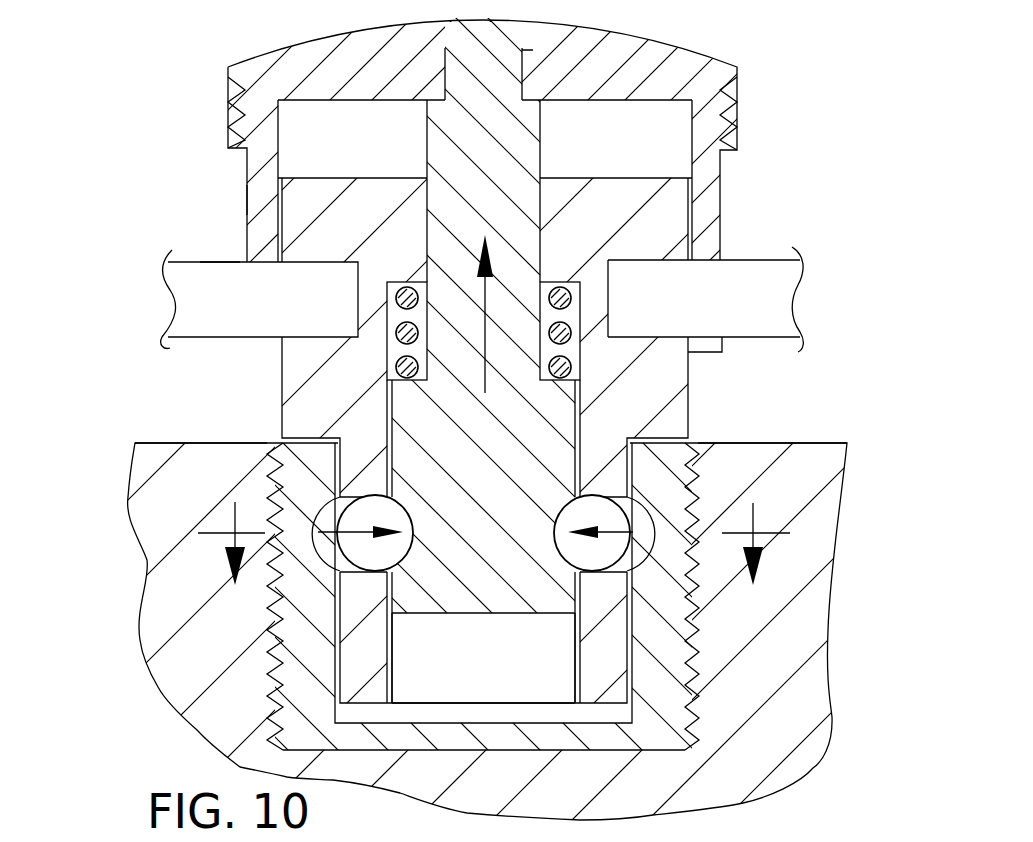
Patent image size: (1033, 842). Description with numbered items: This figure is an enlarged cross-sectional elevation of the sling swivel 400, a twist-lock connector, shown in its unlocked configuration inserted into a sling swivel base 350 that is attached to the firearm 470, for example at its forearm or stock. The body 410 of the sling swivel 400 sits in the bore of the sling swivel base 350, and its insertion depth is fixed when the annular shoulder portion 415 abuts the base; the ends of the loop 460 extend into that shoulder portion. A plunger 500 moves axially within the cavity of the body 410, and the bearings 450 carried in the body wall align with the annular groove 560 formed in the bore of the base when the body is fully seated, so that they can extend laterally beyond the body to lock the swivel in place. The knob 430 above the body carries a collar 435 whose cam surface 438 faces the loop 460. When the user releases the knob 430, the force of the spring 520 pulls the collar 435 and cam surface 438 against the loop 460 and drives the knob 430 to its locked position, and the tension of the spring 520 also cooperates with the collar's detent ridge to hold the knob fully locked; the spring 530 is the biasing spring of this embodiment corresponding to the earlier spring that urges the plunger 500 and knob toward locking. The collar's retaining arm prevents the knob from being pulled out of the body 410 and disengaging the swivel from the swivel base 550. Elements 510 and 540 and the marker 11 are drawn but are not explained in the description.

The sling swivel 400 is at (833, 107).
The knob 430 is at (322, 40).
The stem 540 is at (473, 27).
The collar 435 is at (246, 200).
The loop 460 is at (215, 275).
The cam surface 438 is at (253, 268).
The spring 530 is at (403, 333).
The spring 520 is at (570, 370).
The annular shoulder portion 415 is at (305, 388).
The firearm 470 is at (170, 443).
The passage 510 is at (567, 520).
The plunger 500 is at (513, 579).
The annular groove 560 is at (635, 512).
The swivel base 550 is at (371, 558).
The bearings 450 is at (597, 557).
The body 410 is at (372, 650).
The sling swivel base 350 is at (478, 752).
The section line 11 is at (494, 537).